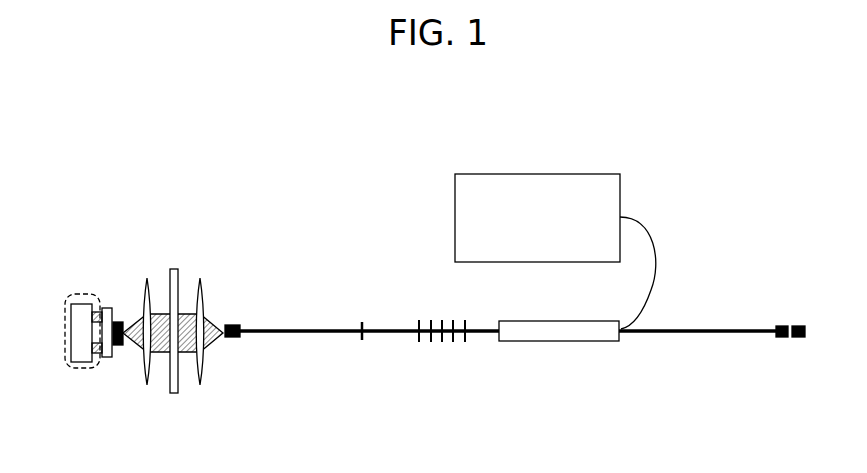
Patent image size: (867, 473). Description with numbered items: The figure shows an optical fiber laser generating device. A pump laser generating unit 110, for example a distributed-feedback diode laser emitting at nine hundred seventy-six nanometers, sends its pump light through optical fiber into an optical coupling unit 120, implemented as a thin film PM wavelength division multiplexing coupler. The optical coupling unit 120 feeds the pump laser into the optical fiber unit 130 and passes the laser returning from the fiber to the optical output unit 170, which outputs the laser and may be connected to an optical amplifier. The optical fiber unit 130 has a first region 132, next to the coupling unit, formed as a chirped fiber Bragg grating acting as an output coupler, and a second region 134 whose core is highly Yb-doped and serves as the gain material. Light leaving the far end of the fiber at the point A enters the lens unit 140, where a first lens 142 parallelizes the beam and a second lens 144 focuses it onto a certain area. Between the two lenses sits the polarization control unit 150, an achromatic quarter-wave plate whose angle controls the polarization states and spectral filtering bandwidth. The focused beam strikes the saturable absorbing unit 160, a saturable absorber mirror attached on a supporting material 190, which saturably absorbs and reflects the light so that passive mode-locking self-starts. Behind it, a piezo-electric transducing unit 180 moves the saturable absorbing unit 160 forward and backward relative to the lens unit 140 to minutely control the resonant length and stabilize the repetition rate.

The pump laser generating unit 110 is at (537, 173).
The optical coupling unit 120 is at (560, 343).
The optical fiber unit 130 is at (362, 334).
The first region 132 is at (429, 352).
The second region 134 is at (358, 344).
The lens unit 140 is at (173, 277).
The first lens 142 is at (200, 275).
The second lens 144 is at (147, 275).
The polarization control unit 150 is at (176, 393).
The saturable absorbing unit 160 is at (119, 345).
The optical output unit 170 is at (711, 328).
The piezo-electric transducing unit 180 is at (80, 368).
The supporting material 190 is at (108, 307).
The point A is at (222, 313).